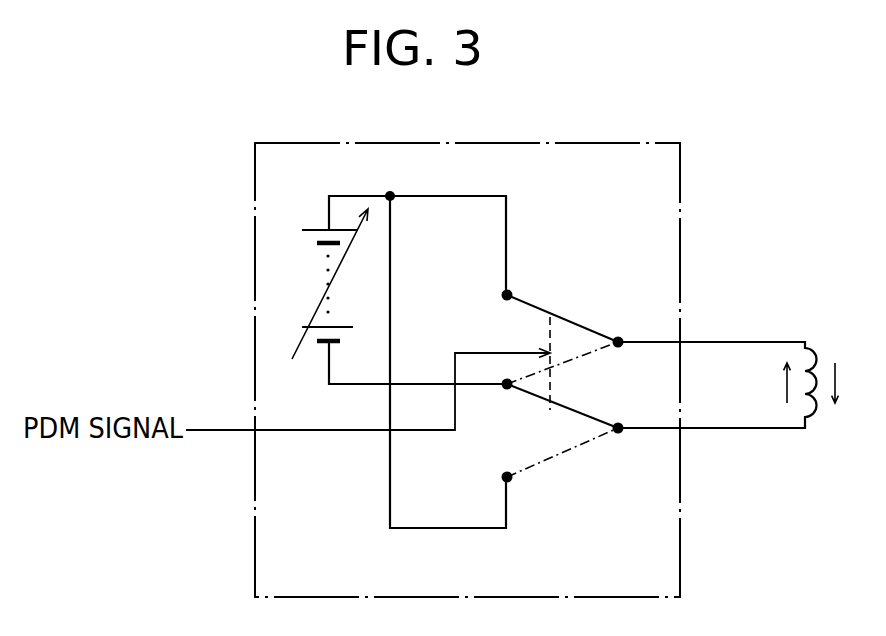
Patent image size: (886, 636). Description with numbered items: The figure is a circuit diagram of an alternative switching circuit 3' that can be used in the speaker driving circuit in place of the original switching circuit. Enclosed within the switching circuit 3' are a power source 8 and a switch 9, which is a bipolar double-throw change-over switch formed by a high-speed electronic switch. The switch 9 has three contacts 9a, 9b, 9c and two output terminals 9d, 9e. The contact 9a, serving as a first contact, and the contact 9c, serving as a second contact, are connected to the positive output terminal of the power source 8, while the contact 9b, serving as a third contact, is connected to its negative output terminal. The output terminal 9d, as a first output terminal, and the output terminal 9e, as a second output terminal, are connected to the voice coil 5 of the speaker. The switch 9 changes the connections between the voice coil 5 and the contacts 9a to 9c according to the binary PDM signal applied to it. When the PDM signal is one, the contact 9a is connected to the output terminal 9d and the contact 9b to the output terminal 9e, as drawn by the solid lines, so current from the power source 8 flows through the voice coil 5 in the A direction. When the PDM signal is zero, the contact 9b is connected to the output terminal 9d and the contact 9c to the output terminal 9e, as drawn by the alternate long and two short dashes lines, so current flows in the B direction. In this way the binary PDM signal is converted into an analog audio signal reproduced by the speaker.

The switching circuit 3' is at (513, 359).
The voice coil 5 is at (815, 358).
The power source 8 is at (320, 293).
The switch 9 is at (533, 382).
The contact 9a is at (507, 295).
The contact 9b is at (507, 385).
The contact 9c is at (507, 477).
The output terminal 9d is at (618, 342).
The output terminal 9e is at (618, 428).